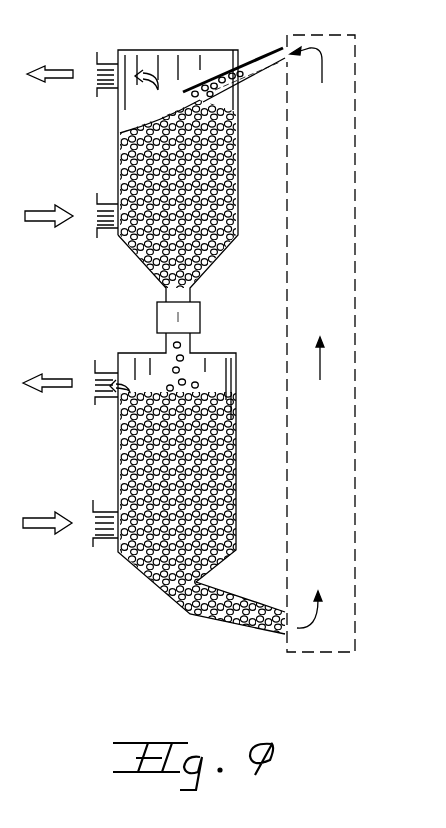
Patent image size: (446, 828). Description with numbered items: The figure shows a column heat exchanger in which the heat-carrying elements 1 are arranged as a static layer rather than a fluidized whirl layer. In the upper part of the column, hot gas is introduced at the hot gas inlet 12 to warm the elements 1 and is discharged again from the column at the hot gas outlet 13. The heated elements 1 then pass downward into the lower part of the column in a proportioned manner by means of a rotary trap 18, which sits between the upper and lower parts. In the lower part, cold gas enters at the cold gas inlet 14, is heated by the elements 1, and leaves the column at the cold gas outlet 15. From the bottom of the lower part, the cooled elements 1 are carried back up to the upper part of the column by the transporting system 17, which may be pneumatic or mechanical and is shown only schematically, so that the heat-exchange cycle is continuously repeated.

The elements 1 is at (212, 155).
The hot gas inlet 12 is at (36, 213).
The hot gas outlet 13 is at (59, 80).
The cold gas inlet 14 is at (35, 523).
The cold gas outlet 15 is at (54, 383).
The transporting system 17 is at (334, 423).
The rotary trap 18 is at (188, 317).